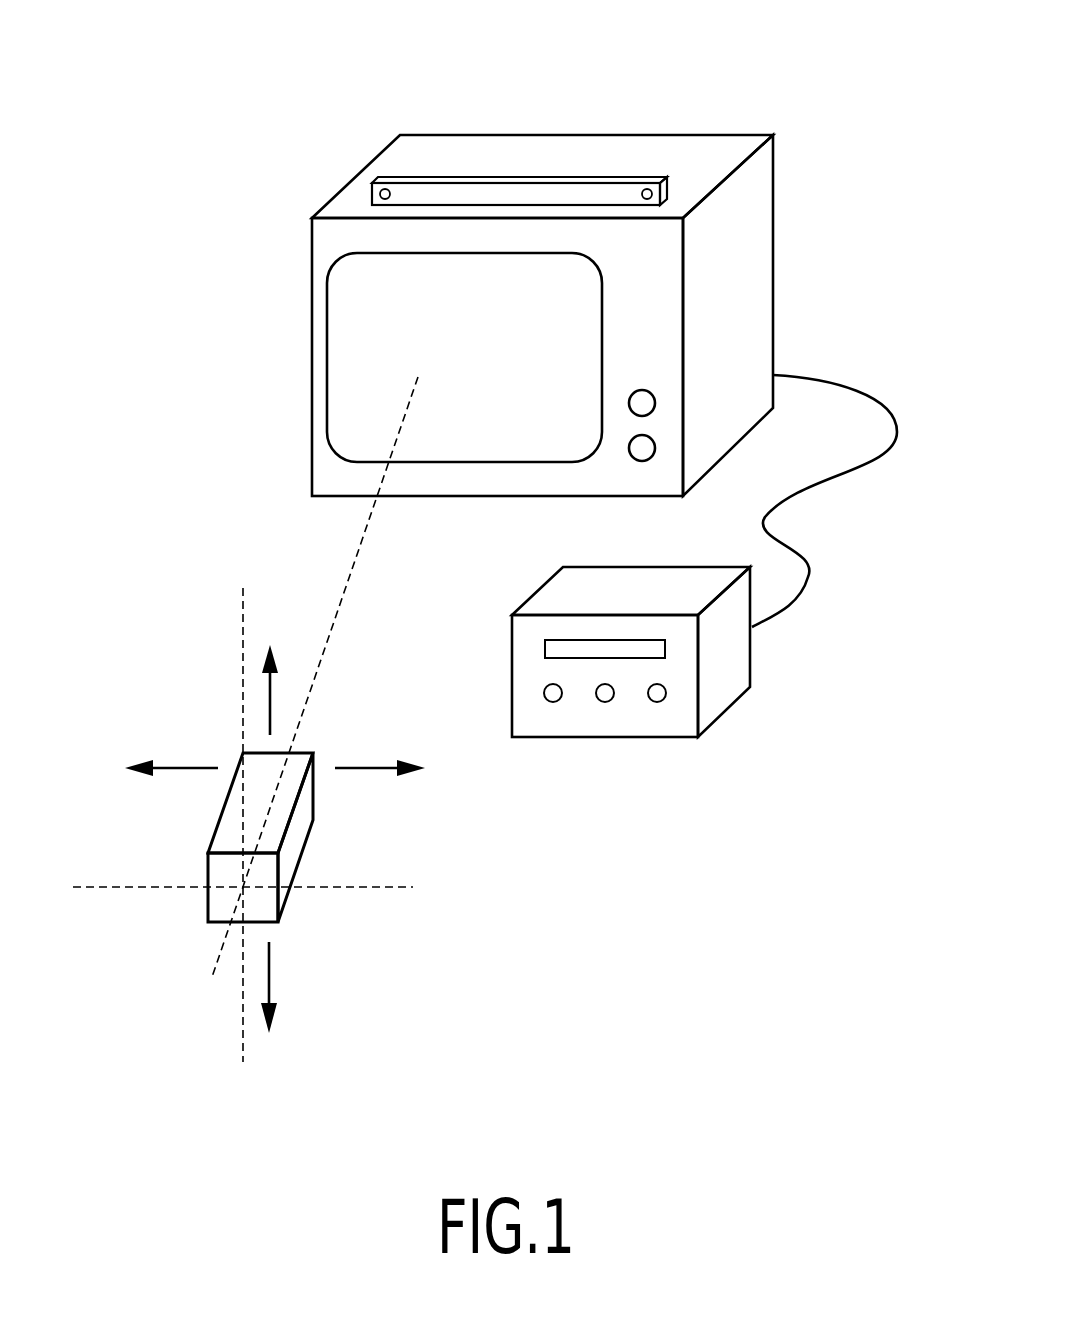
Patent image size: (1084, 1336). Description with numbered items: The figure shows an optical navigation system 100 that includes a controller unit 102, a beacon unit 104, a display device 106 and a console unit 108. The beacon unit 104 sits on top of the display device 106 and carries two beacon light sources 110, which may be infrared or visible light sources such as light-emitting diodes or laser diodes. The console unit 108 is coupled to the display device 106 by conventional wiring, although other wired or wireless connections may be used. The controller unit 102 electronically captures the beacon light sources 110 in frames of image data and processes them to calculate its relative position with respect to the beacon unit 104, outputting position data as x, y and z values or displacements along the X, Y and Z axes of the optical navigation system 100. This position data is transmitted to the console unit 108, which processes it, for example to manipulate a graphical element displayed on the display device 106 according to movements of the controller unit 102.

The optical navigation system 100 is at (824, 39).
The controller unit 102 is at (313, 815).
The beacon unit 104 is at (513, 178).
The display device 106 is at (773, 230).
The console unit 108 is at (750, 670).
The beacon light sources 110 is at (372, 193).